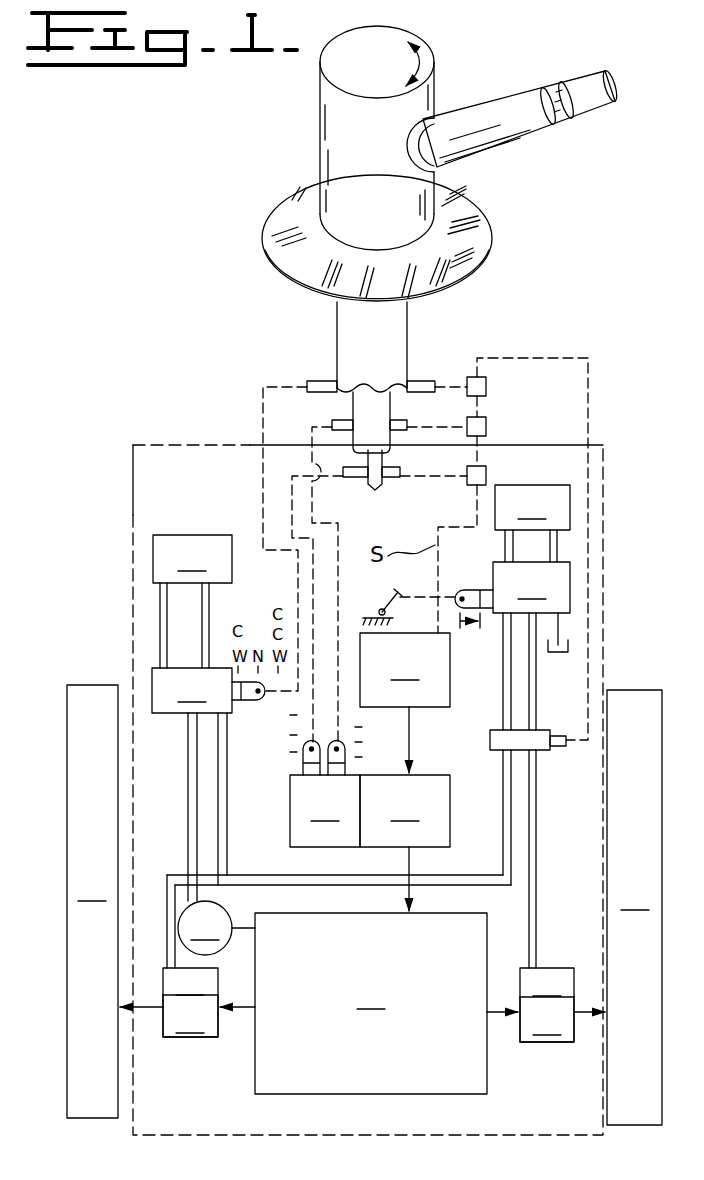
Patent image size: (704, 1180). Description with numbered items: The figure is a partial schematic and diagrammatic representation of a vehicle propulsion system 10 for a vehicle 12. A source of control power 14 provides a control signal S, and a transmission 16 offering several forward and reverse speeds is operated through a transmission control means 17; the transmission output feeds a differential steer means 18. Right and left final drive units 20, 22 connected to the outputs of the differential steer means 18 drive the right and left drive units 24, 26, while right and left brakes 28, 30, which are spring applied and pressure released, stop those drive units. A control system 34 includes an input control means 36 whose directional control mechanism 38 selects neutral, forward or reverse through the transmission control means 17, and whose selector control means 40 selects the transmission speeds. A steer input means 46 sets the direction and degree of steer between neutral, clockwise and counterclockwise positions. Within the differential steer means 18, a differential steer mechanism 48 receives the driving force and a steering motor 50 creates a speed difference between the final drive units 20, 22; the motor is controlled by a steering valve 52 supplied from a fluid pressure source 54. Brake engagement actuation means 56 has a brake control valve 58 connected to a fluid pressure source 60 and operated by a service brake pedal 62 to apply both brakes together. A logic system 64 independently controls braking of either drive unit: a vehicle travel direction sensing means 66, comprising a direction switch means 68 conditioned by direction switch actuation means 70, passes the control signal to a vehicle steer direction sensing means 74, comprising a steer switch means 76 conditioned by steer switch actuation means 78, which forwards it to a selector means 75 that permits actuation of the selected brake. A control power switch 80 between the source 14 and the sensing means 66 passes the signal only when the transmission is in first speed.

The vehicle propulsion system 10 is at (142, 222).
The vehicle 12 is at (133, 498).
The source of control power 14 is at (423, 703).
The transmission 16 is at (405, 843).
The transmission control means 17 is at (329, 777).
The differential steer means 18 is at (168, 792).
The right final drive unit 20 is at (562, 1019).
The left final drive unit 22 is at (187, 1016).
The right drive unit 24 is at (634, 907).
The left drive unit 26 is at (92, 901).
The right brake 28 is at (547, 896).
The left brake 30 is at (190, 1002).
The control system 34 is at (192, 200).
The input control means 36 is at (192, 310).
The directional control mechanism 38 is at (220, 483).
The selector control means 40 is at (202, 420).
The steer input means 46 is at (147, 627).
The differential steer mechanism 48 is at (386, 1003).
The steering motor 50 is at (216, 928).
The steering valve 52 is at (331, 818).
The fluid pressure source 54 is at (192, 601).
The brake engagement actuation means 56 is at (608, 598).
The brake control valve 58 is at (512, 646).
The fluid pressure source 60 is at (532, 523).
The service brake pedal 62 is at (398, 598).
The logic system 64 is at (537, 250).
The vehicle travel direction sensing means 66 is at (403, 492).
The direction switch means 68 is at (500, 429).
The direction switch actuation means 70 is at (437, 418).
The vehicle steer direction sensing means 74 is at (198, 367).
The selector means for permitting actuation of the selected brake 75 is at (556, 713).
The steer switch means 76 is at (502, 388).
The steer switch actuation means 78 is at (432, 345).
The control power switch 80 is at (497, 470).